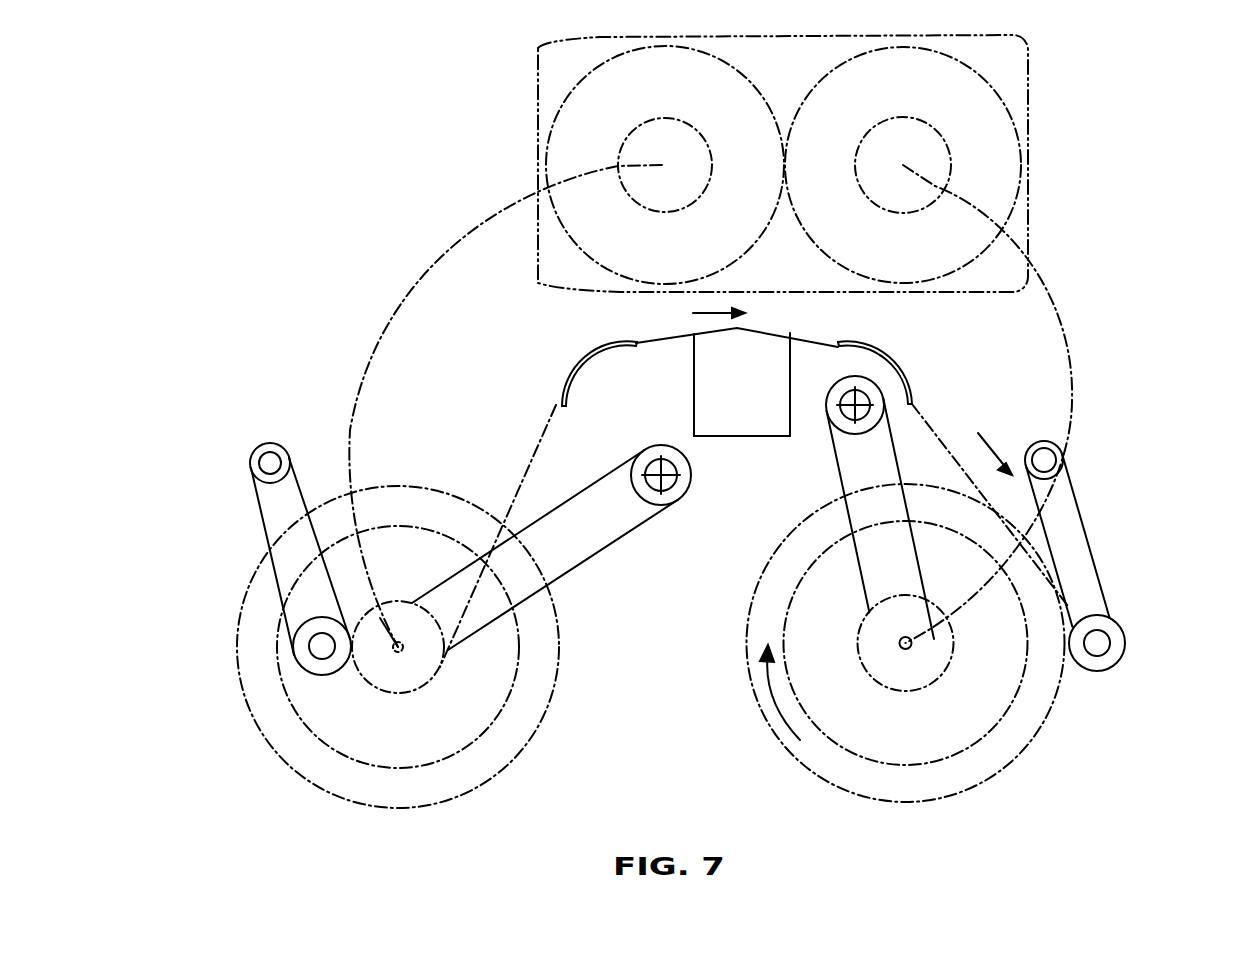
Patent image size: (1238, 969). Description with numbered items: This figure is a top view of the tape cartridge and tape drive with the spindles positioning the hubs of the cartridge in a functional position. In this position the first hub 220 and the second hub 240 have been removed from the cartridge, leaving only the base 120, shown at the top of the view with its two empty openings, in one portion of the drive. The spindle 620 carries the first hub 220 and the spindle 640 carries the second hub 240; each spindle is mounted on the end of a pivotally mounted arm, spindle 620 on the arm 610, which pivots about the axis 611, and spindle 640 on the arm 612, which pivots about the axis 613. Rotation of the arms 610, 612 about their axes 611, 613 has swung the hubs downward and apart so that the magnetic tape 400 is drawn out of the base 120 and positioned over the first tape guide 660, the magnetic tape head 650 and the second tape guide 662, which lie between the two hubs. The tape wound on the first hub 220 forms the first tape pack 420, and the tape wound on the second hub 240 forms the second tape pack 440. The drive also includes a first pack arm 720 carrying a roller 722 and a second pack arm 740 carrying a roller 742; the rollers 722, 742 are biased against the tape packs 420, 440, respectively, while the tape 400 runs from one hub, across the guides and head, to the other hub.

The base 120 is at (1015, 74).
The magnetic tape 400 is at (662, 337).
The magnetic tape head 650 is at (760, 342).
The first tape guide 660 is at (577, 367).
The second tape guide 662 is at (890, 352).
The arm 610 is at (600, 538).
The axis 611 is at (682, 497).
The arm 612 is at (878, 435).
The axis 613 is at (850, 410).
The spindle 620 is at (415, 657).
The spindle 640 is at (903, 648).
The first hub 220 is at (470, 737).
The second hub 240 is at (982, 730).
The first tape pack 420 is at (363, 678).
The second tape pack 440 is at (1050, 710).
The first pack arm 720 is at (267, 514).
The roller 722 is at (302, 658).
The second pack arm 740 is at (1075, 528).
The roller 742 is at (1116, 653).